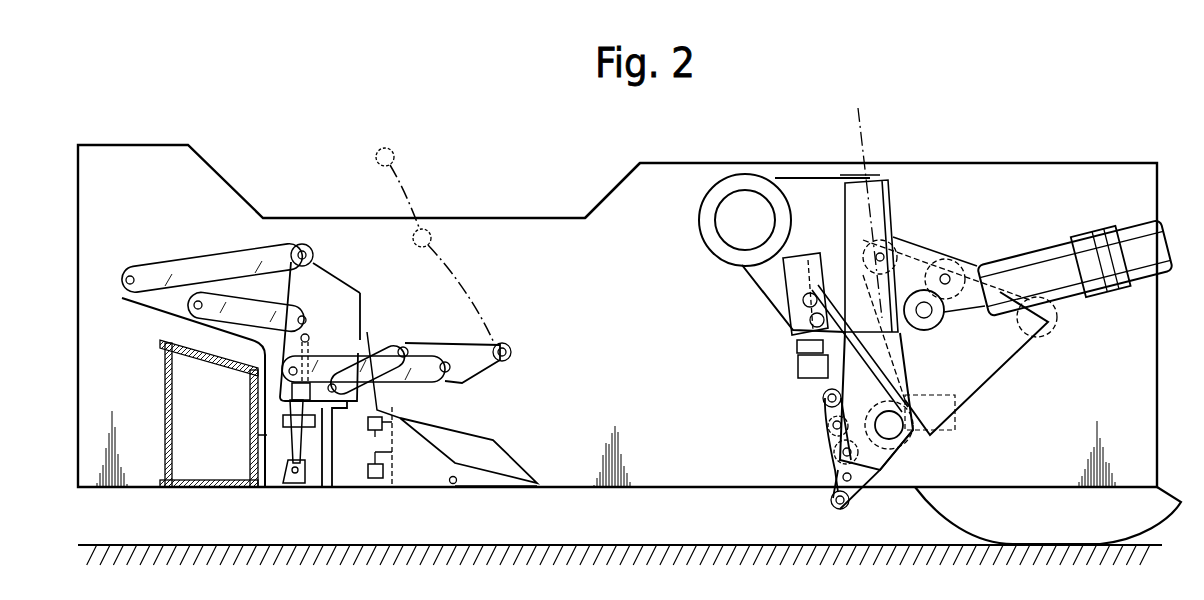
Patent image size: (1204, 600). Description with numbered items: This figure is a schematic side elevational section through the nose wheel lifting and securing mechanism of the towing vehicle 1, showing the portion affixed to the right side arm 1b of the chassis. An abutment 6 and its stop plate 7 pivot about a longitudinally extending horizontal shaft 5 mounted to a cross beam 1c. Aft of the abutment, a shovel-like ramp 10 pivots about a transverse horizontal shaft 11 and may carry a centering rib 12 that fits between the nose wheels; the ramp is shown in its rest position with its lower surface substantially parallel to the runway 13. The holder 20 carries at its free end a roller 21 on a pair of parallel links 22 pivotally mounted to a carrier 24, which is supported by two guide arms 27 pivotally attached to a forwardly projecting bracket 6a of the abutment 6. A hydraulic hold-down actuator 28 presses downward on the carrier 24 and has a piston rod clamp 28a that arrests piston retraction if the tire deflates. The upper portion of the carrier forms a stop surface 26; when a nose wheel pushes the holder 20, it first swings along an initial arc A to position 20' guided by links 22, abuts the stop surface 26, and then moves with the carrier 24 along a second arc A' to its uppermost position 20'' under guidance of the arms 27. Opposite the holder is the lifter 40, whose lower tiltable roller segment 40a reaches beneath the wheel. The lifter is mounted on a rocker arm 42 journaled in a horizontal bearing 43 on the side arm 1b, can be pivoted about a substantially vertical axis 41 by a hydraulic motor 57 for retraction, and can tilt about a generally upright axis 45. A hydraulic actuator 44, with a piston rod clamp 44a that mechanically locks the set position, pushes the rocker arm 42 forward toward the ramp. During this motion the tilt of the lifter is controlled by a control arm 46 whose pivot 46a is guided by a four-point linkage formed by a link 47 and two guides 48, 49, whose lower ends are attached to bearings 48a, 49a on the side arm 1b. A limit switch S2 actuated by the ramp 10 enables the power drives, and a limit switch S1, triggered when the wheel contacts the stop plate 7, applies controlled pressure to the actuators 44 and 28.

The fishing machine 1 is at (694, 150).
The right side arm 1b is at (610, 206).
The cross beam 1c is at (206, 470).
The horizontal shaft 5 is at (262, 427).
The abutment 6 is at (345, 465).
The forwardly projecting bracket 6a is at (150, 300).
The stop plate 7 is at (375, 355).
The ramp 10 is at (515, 482).
The transverse horizontal shaft 11 is at (453, 486).
The centering rib 12 is at (478, 454).
The runway 13 is at (639, 544).
The holder 20 is at (443, 375).
The holder position 20' is at (454, 285).
The uppermost holder position 20'' is at (406, 179).
The roller 21 is at (511, 352).
The parallel links 22 is at (412, 350).
The carrier 24 is at (350, 300).
The stop surface 26 is at (334, 280).
The guide arms 27 is at (218, 300).
The hydraulic hold-down actuator 28 is at (290, 460).
The piston rod clamp 28a is at (290, 405).
The lifter 40 is at (824, 401).
The lower roller segment 40a is at (834, 478).
The vertical axis 41 is at (862, 138).
The rocker arm 42 is at (803, 192).
The horizontally oriented bearing 43 is at (742, 206).
The hydraulic actuator 44 is at (1113, 240).
The piston rod clamp 44a is at (1037, 262).
The upright axis 45 is at (900, 430).
The control arm 46 is at (1003, 348).
The pivot 46a is at (1045, 328).
The link 47 is at (897, 256).
The guide 48 is at (953, 387).
The bearing 48a is at (935, 412).
The guide 49 is at (929, 262).
The bearing 49a is at (953, 280).
The hydraulic motor 57 is at (795, 309).
The initial arc A is at (492, 281).
The second arc A' is at (421, 187).
The limit switch S1 is at (378, 480).
The limit switch S2 is at (380, 420).